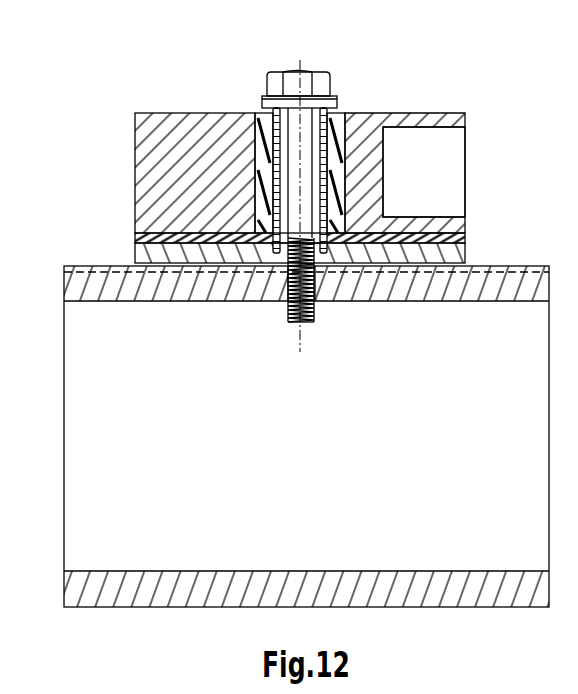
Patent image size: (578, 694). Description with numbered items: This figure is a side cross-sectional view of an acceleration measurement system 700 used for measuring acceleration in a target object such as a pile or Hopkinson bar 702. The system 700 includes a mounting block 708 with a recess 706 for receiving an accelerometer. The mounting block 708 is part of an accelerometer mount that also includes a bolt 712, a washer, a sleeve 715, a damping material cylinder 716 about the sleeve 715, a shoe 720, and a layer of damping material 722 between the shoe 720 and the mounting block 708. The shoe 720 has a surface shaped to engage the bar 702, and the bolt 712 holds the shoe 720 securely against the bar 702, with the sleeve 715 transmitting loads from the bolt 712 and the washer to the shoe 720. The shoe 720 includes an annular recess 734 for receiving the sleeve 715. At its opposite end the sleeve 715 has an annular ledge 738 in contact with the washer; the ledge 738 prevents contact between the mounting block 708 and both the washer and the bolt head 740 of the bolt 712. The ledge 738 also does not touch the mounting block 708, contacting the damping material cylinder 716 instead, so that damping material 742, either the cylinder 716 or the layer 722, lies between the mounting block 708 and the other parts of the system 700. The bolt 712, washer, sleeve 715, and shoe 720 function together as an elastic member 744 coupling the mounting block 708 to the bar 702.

The acceleration measurement system 700 is at (114, 68).
The Hopkinson bar 702 is at (64, 594).
The recess 706 is at (440, 172).
The mounting block 708 is at (135, 160).
The bolt 712 is at (266, 56).
The sleeve 715 is at (262, 150).
The damping material cylinder 716 is at (335, 120).
The shoe 720 is at (135, 242).
The layer of damping material 722 is at (467, 236).
The annular recess 734 is at (262, 258).
The annular ledge 738 is at (264, 108).
The bolt head 740 is at (306, 72).
The damping material 742 is at (125, 193).
The elastic member 744 is at (437, 103).